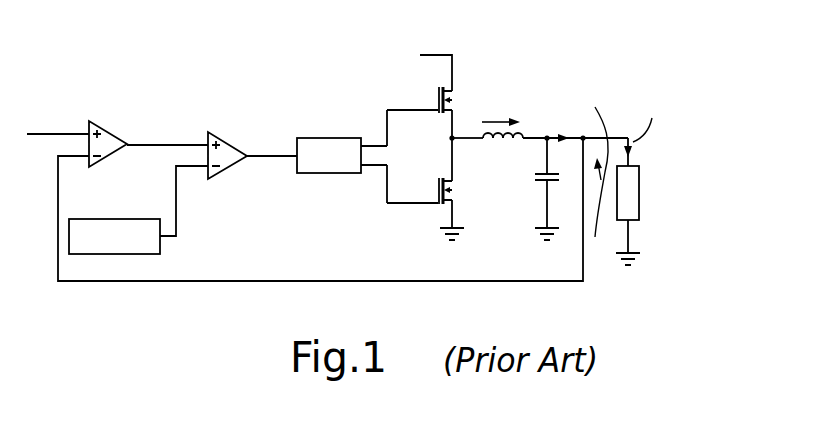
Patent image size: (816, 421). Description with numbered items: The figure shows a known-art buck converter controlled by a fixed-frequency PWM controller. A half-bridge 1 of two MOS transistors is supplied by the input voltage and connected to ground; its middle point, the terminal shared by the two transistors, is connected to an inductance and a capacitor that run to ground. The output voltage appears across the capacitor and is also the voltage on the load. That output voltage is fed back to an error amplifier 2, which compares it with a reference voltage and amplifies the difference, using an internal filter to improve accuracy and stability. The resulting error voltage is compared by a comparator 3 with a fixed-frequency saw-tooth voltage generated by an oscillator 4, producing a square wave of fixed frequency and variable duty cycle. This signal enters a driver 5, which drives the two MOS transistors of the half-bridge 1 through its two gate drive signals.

The half-bridge 1 is at (534, 70).
The error amplifier 2 is at (117, 142).
The comparator 3 is at (237, 152).
The oscillator 4 is at (114, 218).
The driver 5 is at (356, 138).